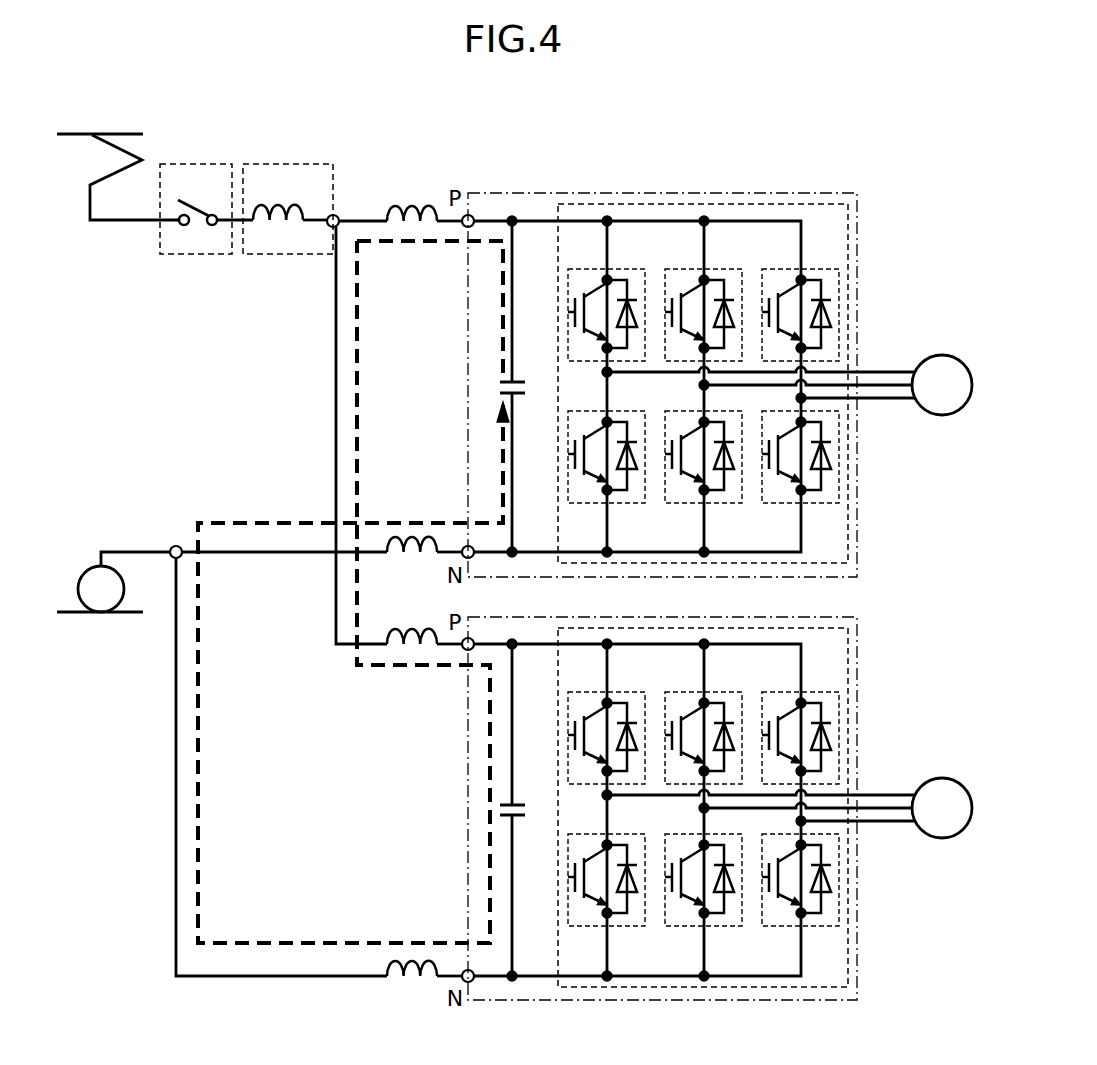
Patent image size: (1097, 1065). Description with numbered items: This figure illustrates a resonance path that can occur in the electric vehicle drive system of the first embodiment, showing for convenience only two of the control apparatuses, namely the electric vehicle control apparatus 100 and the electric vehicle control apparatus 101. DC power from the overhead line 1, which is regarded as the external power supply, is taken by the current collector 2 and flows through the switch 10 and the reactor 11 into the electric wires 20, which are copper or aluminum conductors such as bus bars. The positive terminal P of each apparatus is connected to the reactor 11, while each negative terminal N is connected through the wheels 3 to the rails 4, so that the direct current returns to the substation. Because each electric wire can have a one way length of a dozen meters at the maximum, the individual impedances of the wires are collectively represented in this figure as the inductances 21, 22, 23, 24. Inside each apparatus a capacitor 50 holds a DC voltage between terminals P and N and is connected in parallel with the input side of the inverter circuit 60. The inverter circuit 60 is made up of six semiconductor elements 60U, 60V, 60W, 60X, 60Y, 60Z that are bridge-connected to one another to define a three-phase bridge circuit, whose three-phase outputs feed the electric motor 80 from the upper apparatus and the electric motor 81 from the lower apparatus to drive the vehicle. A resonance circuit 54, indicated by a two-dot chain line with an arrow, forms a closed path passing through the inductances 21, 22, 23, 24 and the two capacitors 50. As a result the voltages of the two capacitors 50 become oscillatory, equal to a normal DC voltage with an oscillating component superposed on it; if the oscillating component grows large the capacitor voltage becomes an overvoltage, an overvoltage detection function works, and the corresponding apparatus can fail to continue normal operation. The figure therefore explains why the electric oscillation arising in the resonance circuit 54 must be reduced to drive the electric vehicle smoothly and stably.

The overhead line 1 is at (82, 133).
The current collector 2 is at (102, 180).
The wheels 3 is at (97, 565).
The rails 4 is at (75, 615).
The switch 10 is at (190, 196).
The reactor 11 is at (276, 200).
The electric wires 20 is at (356, 218).
The inductance 21 is at (407, 203).
The inductance 22 is at (407, 535).
The inductance 23 is at (407, 627).
The inductance 24 is at (407, 958).
The capacitor 50 is at (517, 380).
The resonance circuit 54 is at (357, 362).
The inverter circuit 60 is at (848, 208).
The semiconductor element 60U is at (628, 269).
The semiconductor element 60V is at (725, 269).
The semiconductor element 60W is at (830, 268).
The semiconductor element 60X is at (637, 504).
The semiconductor element 60Y is at (734, 504).
The semiconductor element 60Z is at (833, 504).
The electric motor 80 is at (940, 354).
The electric motor 81 is at (942, 778).
The electric vehicle control apparatus 100 is at (803, 193).
The electric vehicle control apparatus 101 is at (803, 617).